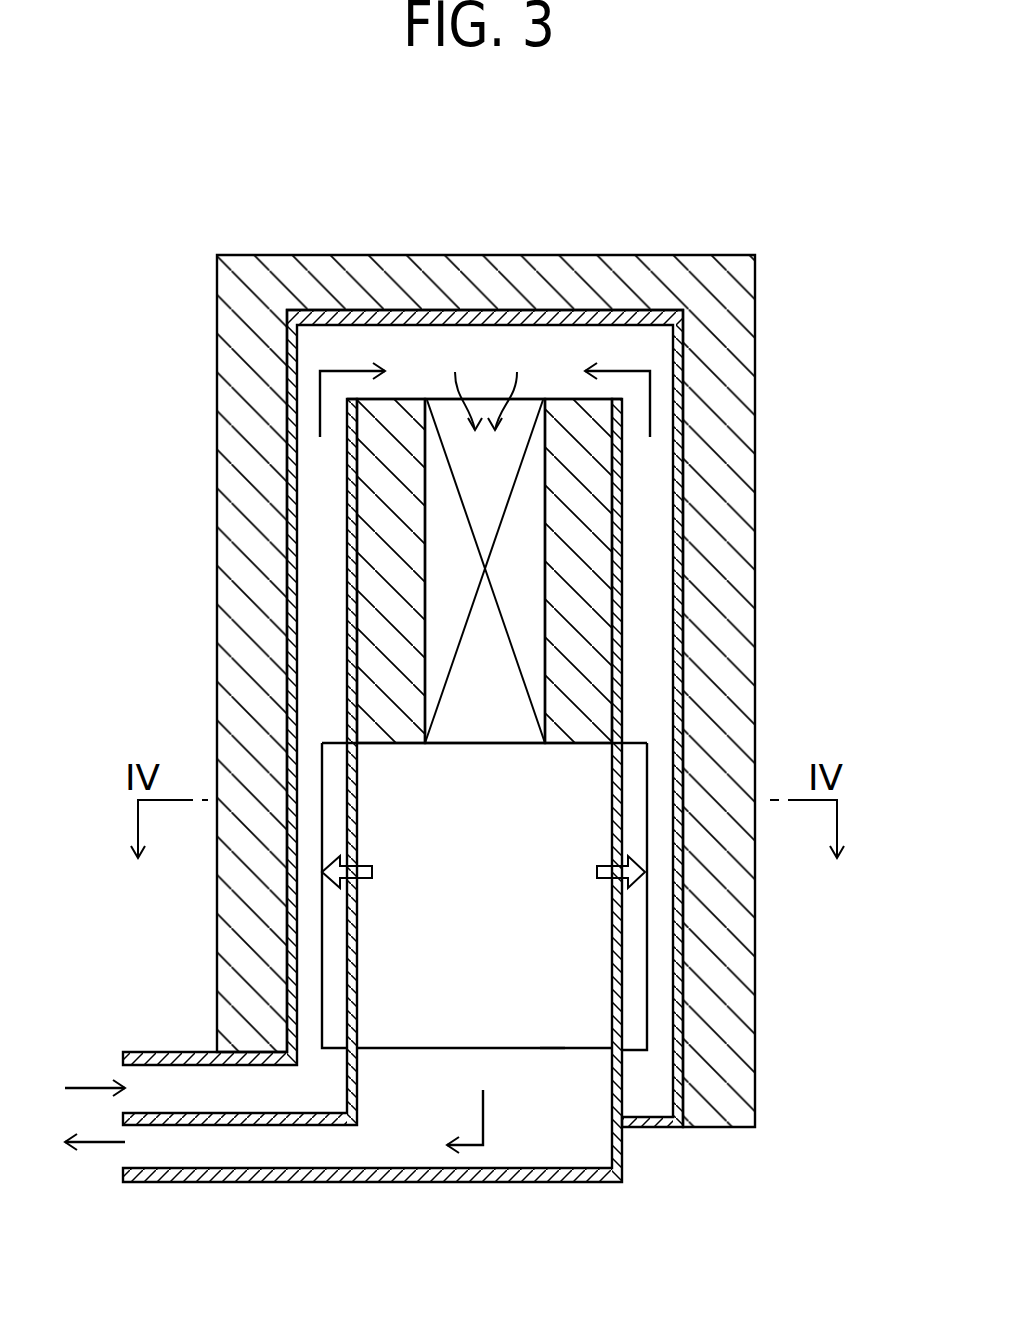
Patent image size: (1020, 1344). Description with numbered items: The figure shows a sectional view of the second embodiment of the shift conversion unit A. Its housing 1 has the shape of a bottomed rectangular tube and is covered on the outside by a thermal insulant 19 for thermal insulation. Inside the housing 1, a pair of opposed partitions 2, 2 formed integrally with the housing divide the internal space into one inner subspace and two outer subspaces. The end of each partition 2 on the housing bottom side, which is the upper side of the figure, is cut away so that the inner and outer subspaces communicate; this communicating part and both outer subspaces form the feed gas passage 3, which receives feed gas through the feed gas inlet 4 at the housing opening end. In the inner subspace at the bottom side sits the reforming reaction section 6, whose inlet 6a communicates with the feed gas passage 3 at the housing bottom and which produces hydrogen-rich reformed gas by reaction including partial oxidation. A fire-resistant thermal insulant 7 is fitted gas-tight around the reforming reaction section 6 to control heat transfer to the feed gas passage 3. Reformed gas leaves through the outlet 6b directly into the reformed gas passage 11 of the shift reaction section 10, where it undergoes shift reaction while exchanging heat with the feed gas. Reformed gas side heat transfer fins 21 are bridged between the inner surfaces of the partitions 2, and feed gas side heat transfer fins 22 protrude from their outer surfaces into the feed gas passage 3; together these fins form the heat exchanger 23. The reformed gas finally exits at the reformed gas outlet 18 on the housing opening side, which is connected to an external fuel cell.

The shift conversion unit A is at (173, 166).
The housing 1 is at (374, 310).
The partition 2 is at (352, 660).
The feed gas passage 3 is at (328, 563).
The feed gas inlet 4 is at (237, 1090).
The reforming reaction section 6 is at (528, 398).
The inlet of the reforming reaction section 6a is at (480, 398).
The outlet of the reforming reaction section 6b is at (495, 737).
The thermal insulant 7 is at (370, 466).
The shift reaction section 10 is at (590, 913).
The reformed gas passage 11 is at (517, 1090).
The reformed gas outlet 18 is at (302, 1152).
The thermal insulant 19 is at (732, 310).
The reformed gas side heat transfer fin 21 is at (400, 1033).
The feed gas side heat transfer fin 22 is at (325, 965).
The heat exchanger 23 is at (552, 1052).